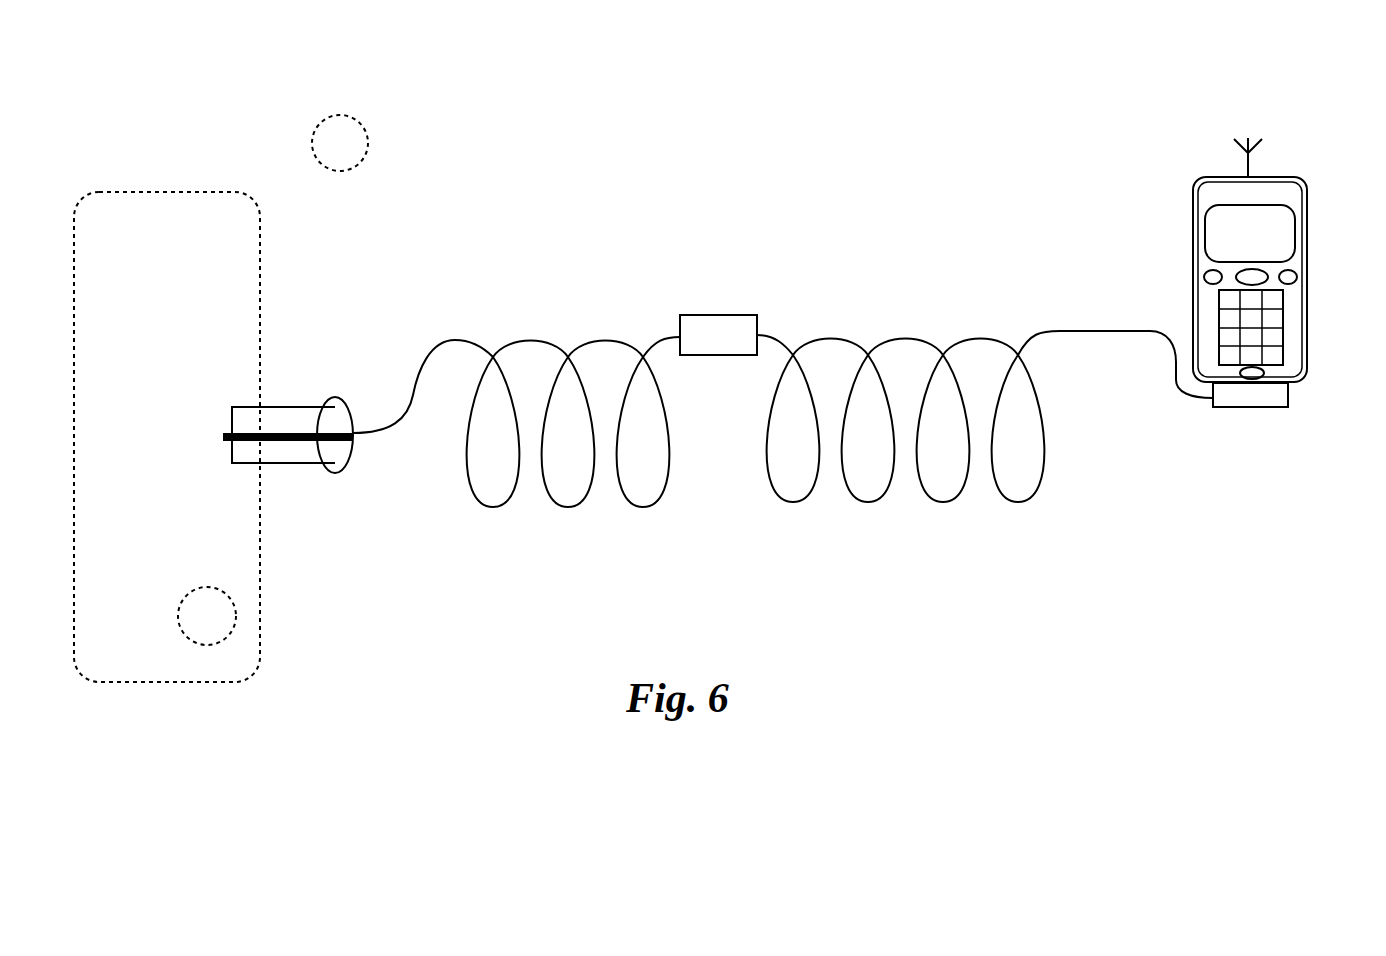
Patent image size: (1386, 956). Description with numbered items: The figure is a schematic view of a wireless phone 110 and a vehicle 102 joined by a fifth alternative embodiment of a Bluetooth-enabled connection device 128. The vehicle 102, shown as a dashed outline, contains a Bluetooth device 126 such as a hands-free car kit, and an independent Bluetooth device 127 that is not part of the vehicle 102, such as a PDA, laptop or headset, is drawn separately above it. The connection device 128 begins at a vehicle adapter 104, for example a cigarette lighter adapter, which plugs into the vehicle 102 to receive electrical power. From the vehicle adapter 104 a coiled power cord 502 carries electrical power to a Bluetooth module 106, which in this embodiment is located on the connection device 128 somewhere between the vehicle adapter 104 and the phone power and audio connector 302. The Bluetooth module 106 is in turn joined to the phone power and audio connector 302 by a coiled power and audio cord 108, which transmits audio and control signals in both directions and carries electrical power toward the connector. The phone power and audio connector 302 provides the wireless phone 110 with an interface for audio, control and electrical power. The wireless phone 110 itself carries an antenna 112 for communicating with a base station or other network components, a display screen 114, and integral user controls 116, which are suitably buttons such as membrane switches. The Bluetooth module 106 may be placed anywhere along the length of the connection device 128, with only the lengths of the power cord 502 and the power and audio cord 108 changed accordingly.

The vehicle 102 is at (166, 192).
The vehicle adapter 104 is at (283, 463).
The Bluetooth module 106 is at (748, 298).
The power and audio cord 108 is at (943, 500).
The wireless phone 110 is at (1307, 262).
The antenna 112 is at (1270, 132).
The display screen 114 is at (1297, 222).
The integral user controls 116 is at (1285, 323).
The Bluetooth device 126 is at (225, 610).
The independent Bluetooth device 127 is at (338, 117).
The connection device 128 is at (697, 147).
The phone power and audio connector 302 is at (1290, 395).
The power cord 502 is at (460, 338).